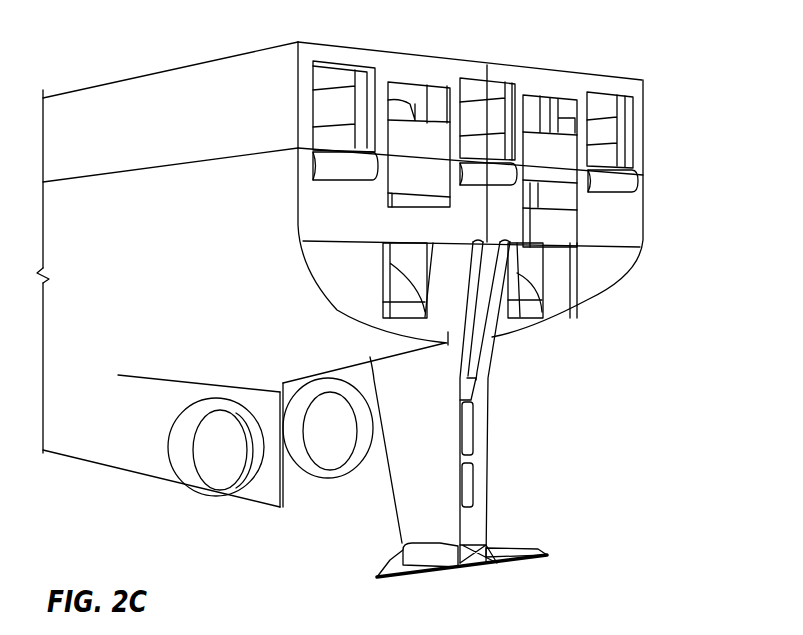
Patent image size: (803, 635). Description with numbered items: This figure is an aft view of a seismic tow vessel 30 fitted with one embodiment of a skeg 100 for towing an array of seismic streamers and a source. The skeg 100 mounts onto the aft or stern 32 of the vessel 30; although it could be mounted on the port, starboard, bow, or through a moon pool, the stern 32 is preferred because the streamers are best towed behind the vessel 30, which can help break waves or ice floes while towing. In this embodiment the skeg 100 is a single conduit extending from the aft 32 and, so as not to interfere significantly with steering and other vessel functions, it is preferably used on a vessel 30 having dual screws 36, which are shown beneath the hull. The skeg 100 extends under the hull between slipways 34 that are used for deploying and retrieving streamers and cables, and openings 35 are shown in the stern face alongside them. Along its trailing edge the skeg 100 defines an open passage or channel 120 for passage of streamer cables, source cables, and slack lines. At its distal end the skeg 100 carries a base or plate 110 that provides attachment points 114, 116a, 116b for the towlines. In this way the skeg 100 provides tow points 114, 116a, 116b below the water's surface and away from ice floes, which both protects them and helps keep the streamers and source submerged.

The seismic tow vessel 30 is at (213, 58).
The aft or stern 32 is at (402, 67).
The slipways 34 is at (410, 278).
The windows 35 is at (320, 106).
The dual screws 36 is at (207, 500).
The skeg 100 is at (576, 437).
The base or plate 110 is at (445, 570).
The attachment point 114 is at (483, 563).
The attachment point 116a is at (380, 570).
The attachment point 116b is at (544, 530).
The open passage or channel 120 is at (478, 388).